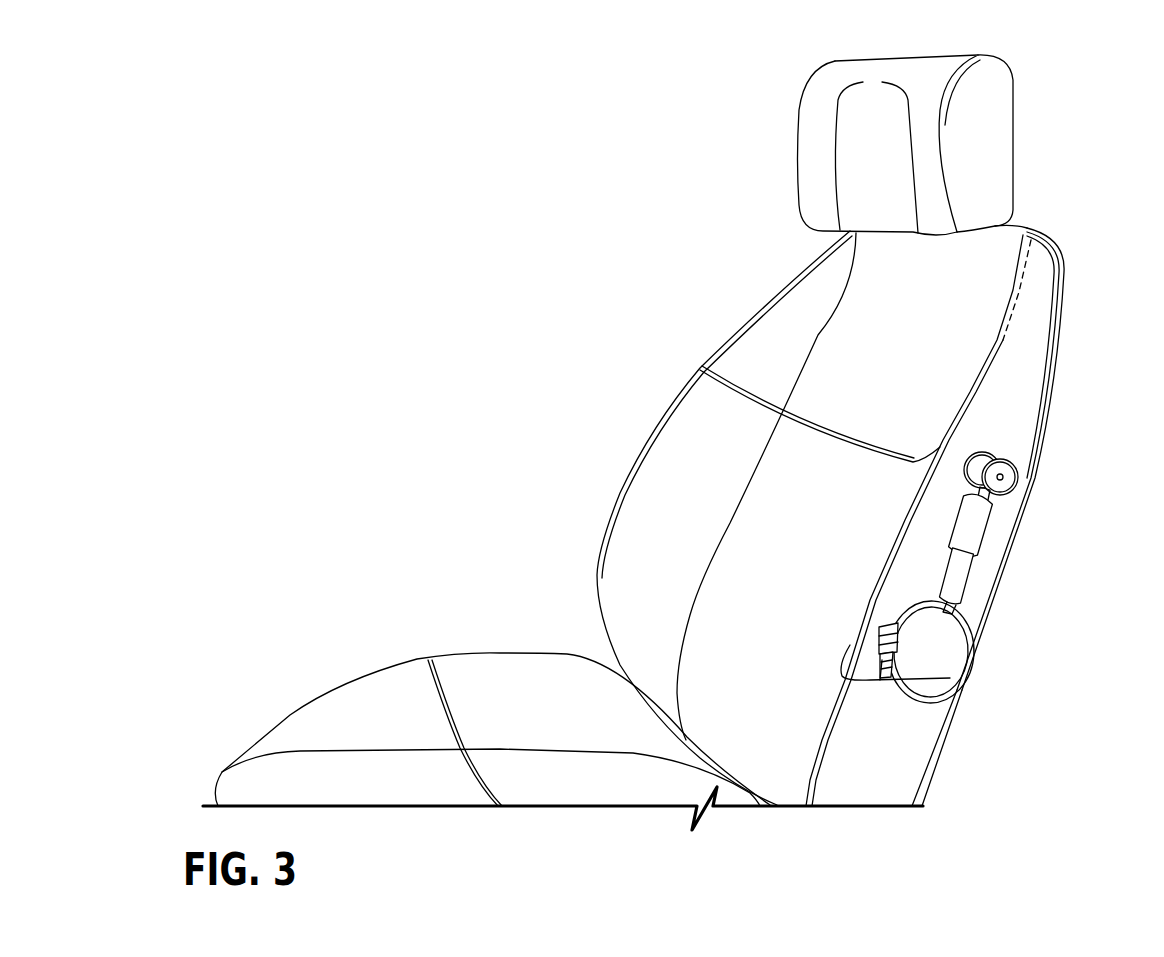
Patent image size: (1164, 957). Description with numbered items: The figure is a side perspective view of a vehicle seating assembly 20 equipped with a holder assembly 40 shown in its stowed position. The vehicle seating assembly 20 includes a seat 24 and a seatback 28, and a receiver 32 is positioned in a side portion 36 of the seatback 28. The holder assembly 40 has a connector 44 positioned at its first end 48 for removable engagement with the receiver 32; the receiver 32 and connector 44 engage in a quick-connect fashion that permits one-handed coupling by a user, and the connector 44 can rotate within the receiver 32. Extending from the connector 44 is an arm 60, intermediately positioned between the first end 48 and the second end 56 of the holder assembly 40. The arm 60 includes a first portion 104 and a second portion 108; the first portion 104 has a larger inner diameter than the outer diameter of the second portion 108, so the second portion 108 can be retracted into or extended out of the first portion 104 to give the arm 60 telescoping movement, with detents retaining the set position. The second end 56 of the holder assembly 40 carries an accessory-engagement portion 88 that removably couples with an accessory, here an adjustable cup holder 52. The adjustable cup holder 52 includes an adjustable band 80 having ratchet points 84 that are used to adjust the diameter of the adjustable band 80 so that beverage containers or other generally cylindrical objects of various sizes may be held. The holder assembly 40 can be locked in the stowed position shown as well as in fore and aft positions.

The vehicle seating assembly 20 is at (467, 328).
The seat 24 is at (368, 700).
The seatback 28 is at (790, 315).
The side portion 36 is at (1033, 293).
The receiver 32 is at (973, 450).
The first end 48 is at (1013, 453).
The connector 44 is at (1002, 482).
The arm 60 is at (982, 532).
The first portion 104 is at (963, 518).
The second portion 108 is at (950, 580).
The holder assembly 40 is at (978, 567).
The second end 56 is at (907, 597).
The adjustable cup holder 52 is at (958, 693).
The accessory-engagement portion 88 is at (983, 618).
The adjustable band 80 is at (905, 705).
The ratchet points 84 is at (880, 680).